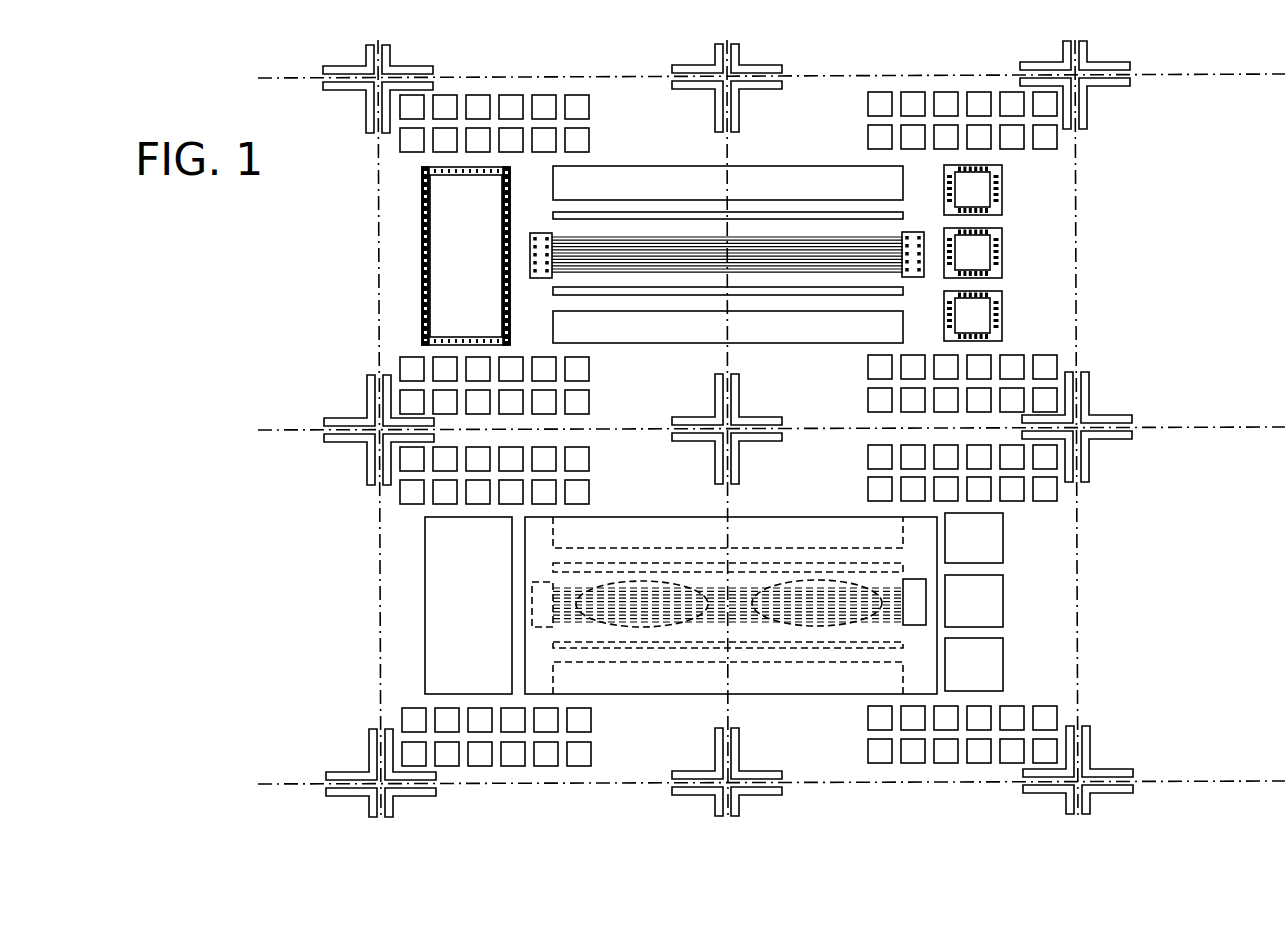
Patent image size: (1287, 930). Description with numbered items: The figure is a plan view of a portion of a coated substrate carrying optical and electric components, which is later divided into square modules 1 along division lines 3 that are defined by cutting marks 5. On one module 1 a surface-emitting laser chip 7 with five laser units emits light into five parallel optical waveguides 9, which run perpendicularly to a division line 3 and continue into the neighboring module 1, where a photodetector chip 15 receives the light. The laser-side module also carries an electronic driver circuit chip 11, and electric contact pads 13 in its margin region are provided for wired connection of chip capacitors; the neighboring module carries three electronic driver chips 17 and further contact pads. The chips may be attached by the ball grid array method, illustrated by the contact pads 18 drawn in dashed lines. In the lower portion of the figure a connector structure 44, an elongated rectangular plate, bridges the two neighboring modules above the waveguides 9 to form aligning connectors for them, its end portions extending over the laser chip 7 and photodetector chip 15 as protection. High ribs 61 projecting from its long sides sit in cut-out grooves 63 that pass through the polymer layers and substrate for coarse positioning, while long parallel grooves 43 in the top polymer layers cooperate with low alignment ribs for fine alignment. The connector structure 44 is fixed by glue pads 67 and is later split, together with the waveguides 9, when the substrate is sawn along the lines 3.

The module 1 is at (623, 90).
The division line 3 is at (1079, 205).
The marks for cutting 5 is at (1092, 85).
The surface-emitting laser chip 7 is at (545, 233).
The optical waveguides 9 is at (645, 243).
The electronic driver circuit chip 11 is at (415, 213).
The electric contact pads 13 is at (410, 357).
The photodetector chip 15 is at (910, 233).
The electronic driver chips 17 is at (1003, 190).
The contact pads 18 is at (543, 278).
The grooves 43 is at (808, 215).
The connector structure 44 is at (824, 520).
The ribs 61 is at (642, 520).
The cut-out grooves 63 is at (654, 175).
The glue pads 67 is at (610, 583).